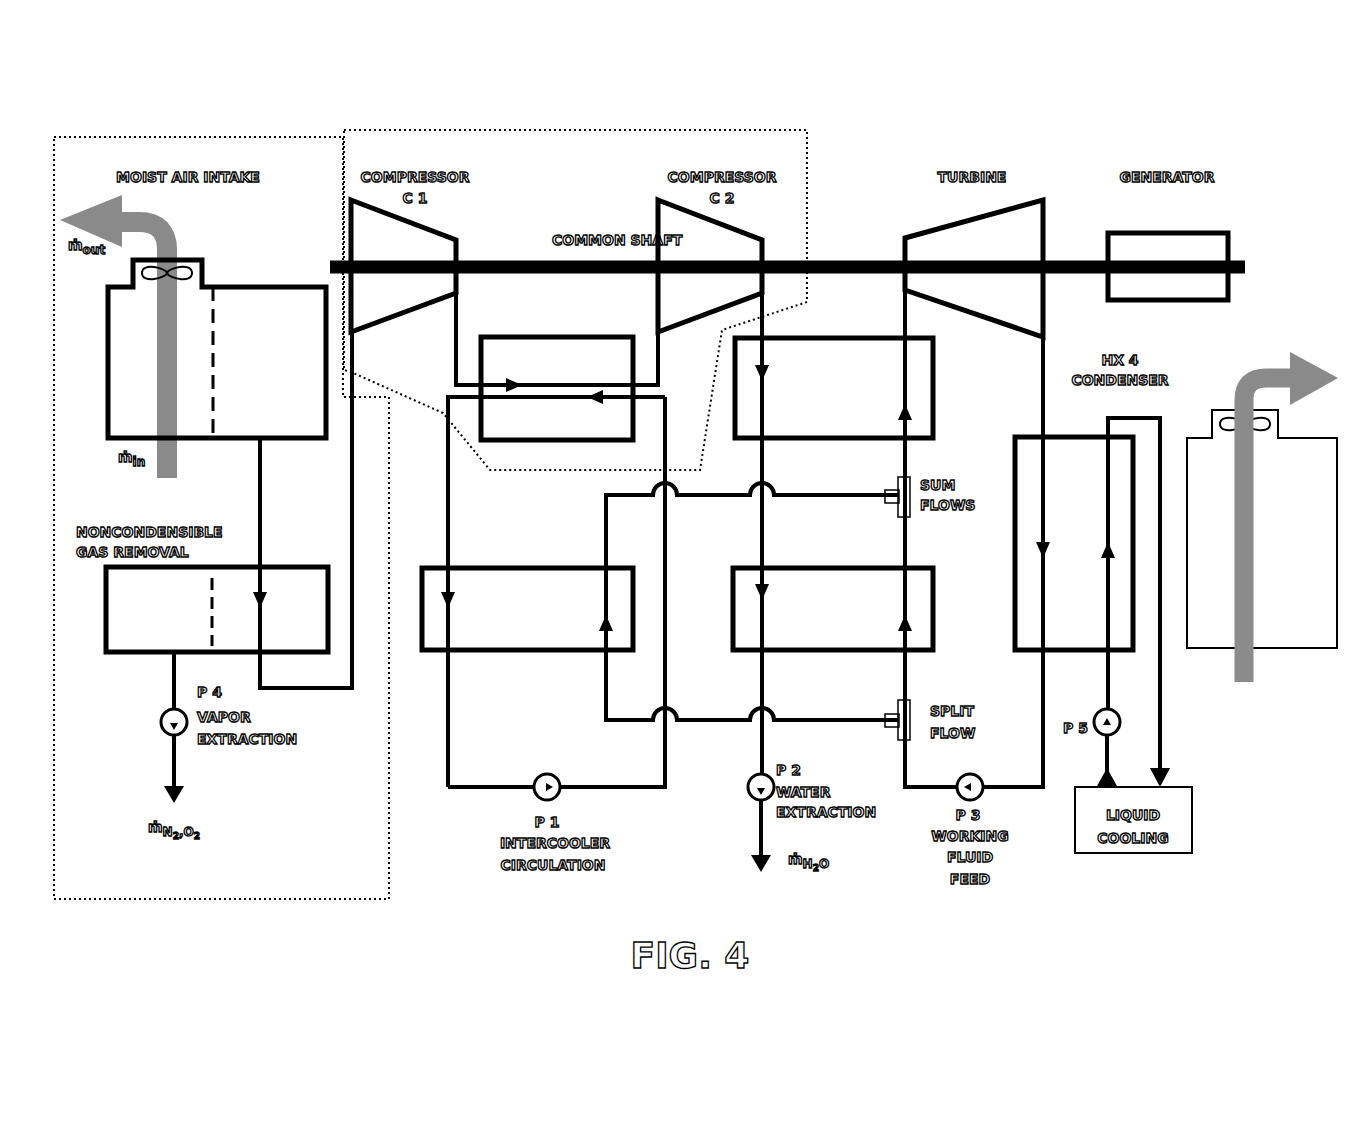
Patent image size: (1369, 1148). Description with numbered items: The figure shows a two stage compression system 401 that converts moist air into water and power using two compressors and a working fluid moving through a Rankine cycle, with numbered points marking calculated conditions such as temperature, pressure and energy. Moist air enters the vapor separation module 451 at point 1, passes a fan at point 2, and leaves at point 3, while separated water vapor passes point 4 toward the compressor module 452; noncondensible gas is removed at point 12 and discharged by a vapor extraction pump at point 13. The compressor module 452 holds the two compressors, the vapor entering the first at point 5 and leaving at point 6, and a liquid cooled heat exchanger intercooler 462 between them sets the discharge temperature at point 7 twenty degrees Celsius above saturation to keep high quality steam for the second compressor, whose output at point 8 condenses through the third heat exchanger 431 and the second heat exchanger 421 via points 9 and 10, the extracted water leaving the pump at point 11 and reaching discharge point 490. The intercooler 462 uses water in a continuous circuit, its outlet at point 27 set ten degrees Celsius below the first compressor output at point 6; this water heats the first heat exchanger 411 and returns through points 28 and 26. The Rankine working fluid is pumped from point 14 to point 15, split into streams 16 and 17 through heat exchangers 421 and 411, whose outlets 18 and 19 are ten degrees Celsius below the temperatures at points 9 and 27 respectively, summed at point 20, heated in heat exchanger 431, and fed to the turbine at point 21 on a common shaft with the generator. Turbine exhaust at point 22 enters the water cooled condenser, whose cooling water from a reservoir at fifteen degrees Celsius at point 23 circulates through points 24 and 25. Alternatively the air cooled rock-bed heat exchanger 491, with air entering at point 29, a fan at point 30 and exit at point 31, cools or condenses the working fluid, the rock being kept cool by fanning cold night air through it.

The process condition point 1 is at (126, 336).
The process condition point 2 is at (217, 349).
The process condition point 3 is at (125, 221).
The process condition point 4 is at (302, 510).
The process condition point 5 is at (359, 366).
The process condition point 6 is at (545, 342).
The process condition point 7 is at (665, 358).
The process condition point 8 is at (753, 394).
The process condition point 9 is at (753, 586).
The process condition point 10 is at (747, 750).
The process condition point 11 is at (754, 823).
The process condition point 12 is at (217, 638).
The process condition point 13 is at (167, 756).
The process condition point 14 is at (1000, 725).
The process condition point 15 is at (921, 743).
The process condition point 16 is at (917, 644).
The process condition point 17 is at (748, 644).
The process condition point 18 is at (920, 531).
The process condition point 19 is at (752, 525).
The process condition point 20 is at (910, 484).
The process condition point 21 is at (917, 392).
The process condition point 22 is at (1032, 493).
The process condition point 23 is at (1096, 747).
The process condition point 24 is at (1092, 679).
The process condition point 25 is at (1119, 597).
The process condition point 26 is at (574, 598).
The process condition point 27 is at (543, 479).
The process condition point 28 is at (436, 677).
The process condition point 29 is at (1267, 531).
The process condition point 30 is at (1251, 439).
The process condition point 31 is at (1288, 371).
The two stage compression system 401 is at (1218, 84).
The heat exchanger 411 is at (497, 558).
The heat exchanger 421 is at (855, 565).
The heat exchanger 431 is at (872, 332).
The vapor separation module 451 is at (216, 157).
The compressor module 452 is at (547, 145).
The heat exchanger intercooler 462 is at (600, 332).
The discharge point 490 is at (740, 805).
The rock-bed heat exchanger 491 is at (1262, 602).